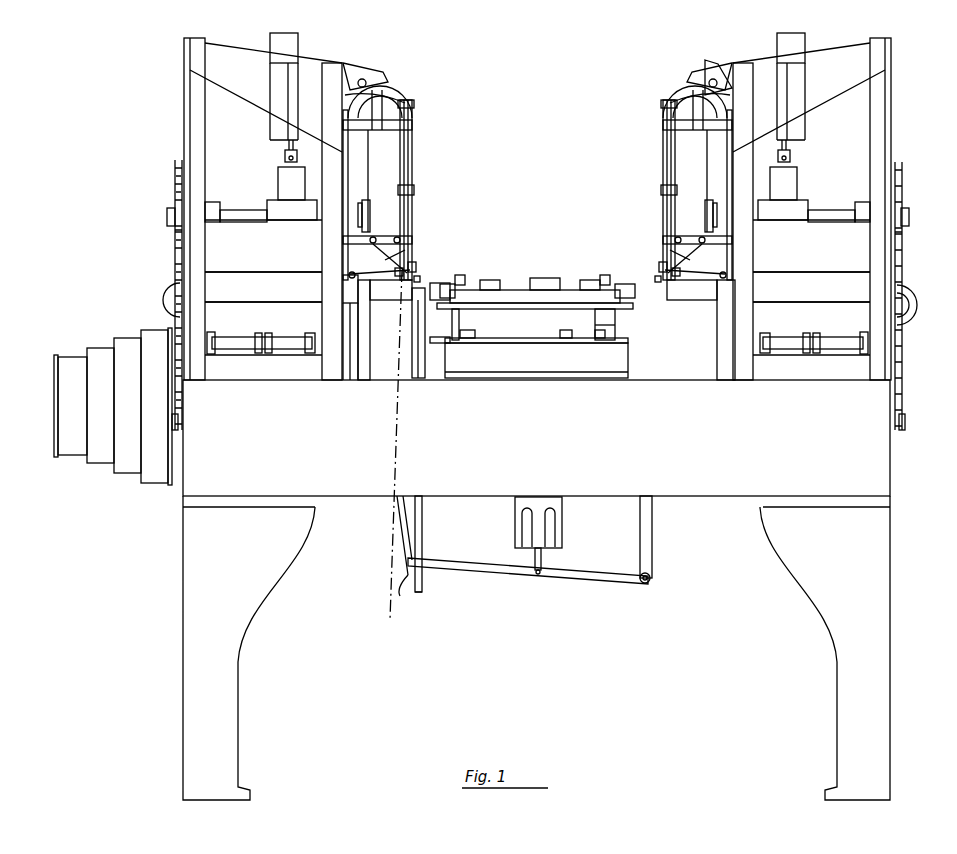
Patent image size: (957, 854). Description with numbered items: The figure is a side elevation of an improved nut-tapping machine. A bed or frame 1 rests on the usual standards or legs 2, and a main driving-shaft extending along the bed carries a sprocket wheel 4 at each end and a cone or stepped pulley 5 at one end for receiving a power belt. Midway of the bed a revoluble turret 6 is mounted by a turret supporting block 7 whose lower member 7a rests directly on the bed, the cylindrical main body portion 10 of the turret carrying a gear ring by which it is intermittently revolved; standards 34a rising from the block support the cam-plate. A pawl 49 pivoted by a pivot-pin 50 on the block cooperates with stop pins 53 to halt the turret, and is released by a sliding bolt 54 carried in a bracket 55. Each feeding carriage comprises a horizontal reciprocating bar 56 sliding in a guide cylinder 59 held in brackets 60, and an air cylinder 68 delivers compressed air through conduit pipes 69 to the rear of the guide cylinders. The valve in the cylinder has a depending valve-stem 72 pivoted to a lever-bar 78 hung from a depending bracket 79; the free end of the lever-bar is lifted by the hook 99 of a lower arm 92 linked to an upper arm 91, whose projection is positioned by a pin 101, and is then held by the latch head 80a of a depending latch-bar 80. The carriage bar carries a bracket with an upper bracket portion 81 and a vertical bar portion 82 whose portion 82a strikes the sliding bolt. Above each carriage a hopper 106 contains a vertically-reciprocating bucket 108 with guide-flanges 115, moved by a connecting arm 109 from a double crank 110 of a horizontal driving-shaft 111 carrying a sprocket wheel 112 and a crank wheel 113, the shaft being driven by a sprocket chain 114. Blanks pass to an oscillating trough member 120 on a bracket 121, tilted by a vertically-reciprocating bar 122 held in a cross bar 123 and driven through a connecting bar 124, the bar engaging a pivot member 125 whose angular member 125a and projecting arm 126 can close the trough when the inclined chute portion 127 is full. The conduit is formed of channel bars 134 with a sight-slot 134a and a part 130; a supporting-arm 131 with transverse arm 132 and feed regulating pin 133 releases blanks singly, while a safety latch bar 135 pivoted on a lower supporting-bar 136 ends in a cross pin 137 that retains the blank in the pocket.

The bed or frame 1 is at (880, 468).
The standards or legs 2 is at (238, 690).
The sprocket wheel 4 is at (184, 422).
The cone or stepped pulley 5 is at (98, 356).
The revoluble turret 6 is at (620, 306).
The turret supporting-frame or block 7 is at (628, 350).
The lower part or member of turret block 7a is at (628, 370).
The cylindrical main body portion of turret 10 is at (584, 321).
The standards 34a is at (618, 338).
The pawl 49 is at (490, 343).
The pivot-pin 50 is at (458, 337).
The stop pins 53 is at (592, 337).
The sliding bolt 54 is at (438, 343).
The bracket 55 is at (455, 342).
The horizontal reciprocating bar 56 is at (388, 295).
The guide cylinder 59 is at (258, 290).
The brackets 60 is at (325, 310).
The air cylinder 68 is at (550, 508).
The air or fluid conduit pipes 69 is at (245, 332).
The depending valve-stem 72 is at (542, 555).
The lever-bar 78 is at (487, 572).
The depending bracket 79 is at (652, 538).
The depending latch-bar 80 is at (402, 543).
The latch head 80a is at (398, 578).
The upper bracket portion 81 is at (537, 268).
The vertically-extending bar portion 82 is at (360, 372).
The portion of vertical bar 82a is at (362, 345).
The upper arm 91 is at (418, 338).
The lower arm 92 is at (422, 530).
The hook or bracket portion 99 is at (424, 592).
The pin 101 is at (432, 300).
The hopper 106 is at (262, 98).
The vertically-reciprocating bucket 108 is at (270, 45).
The connecting arm 109 is at (285, 150).
The double crank 110 is at (278, 197).
The horizontal driving-shaft 111 is at (248, 222).
The sprocket wheel 112 is at (170, 210).
The crank wheel 113 is at (537, 216).
The sprocket chain 114 is at (176, 252).
The guide-flanges 115 is at (298, 52).
The oscillating trough member 120 is at (372, 66).
The bracket 121 is at (362, 78).
The vertically-reciprocating bar 122 is at (700, 108).
The cross bar 123 is at (360, 131).
The connecting bar or arm 124 is at (368, 196).
The pivot member 125 is at (348, 98).
The angularly-extending member 125a is at (412, 106).
The projecting arm 126 is at (705, 62).
The inclined chute portion 127 is at (396, 90).
The tube 130 is at (537, 190).
The supporting-arm 131 is at (380, 266).
The transversely disposed arm 132 is at (416, 268).
The feed regulating pin 133 is at (416, 258).
The channel bars 134 is at (412, 150).
The sight-slot or opening 134a is at (412, 160).
The safety latch bar 135 is at (412, 240).
The lower supporting-bar 136 is at (537, 232).
The cross bar or pin 137 is at (420, 280).